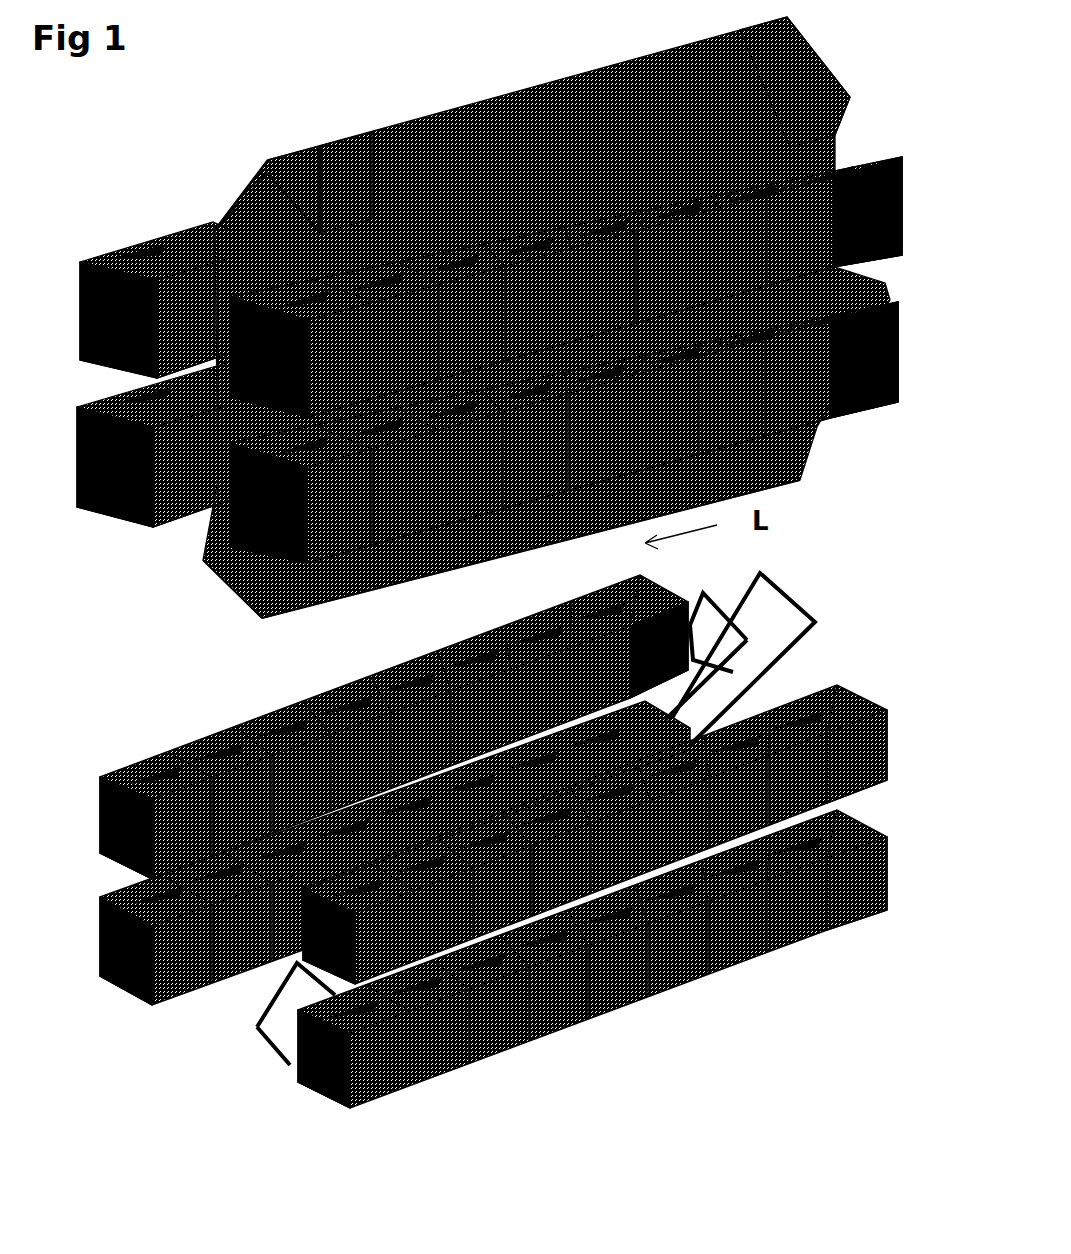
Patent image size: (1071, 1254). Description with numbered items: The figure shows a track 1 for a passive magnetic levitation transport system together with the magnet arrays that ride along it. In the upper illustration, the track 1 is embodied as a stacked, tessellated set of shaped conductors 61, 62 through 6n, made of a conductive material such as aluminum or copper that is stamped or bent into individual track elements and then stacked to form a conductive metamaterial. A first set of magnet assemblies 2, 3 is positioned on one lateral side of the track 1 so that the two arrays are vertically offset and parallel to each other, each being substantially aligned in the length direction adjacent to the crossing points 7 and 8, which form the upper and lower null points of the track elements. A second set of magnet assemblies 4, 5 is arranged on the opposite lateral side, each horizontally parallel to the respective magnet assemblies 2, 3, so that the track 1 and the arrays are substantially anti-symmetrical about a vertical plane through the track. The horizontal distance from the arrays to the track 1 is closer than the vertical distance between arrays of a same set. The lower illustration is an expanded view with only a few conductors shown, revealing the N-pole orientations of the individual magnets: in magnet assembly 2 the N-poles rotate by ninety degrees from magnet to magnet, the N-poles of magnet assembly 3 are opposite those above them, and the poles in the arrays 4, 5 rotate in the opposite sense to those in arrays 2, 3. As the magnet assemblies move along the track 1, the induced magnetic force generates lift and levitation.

The track 1 is at (447, 107).
The magnet assembly 2 is at (910, 180).
The magnet assembly 3 is at (902, 330).
The magnet assembly 4 is at (78, 275).
The magnet assembly 5 is at (73, 427).
The shaped conductor 61 is at (260, 157).
The shaped conductor 62 is at (267, 157).
The shaped conductor 6n is at (813, 23).
The crossing point 7 is at (220, 333).
The crossing point 8 is at (143, 518).